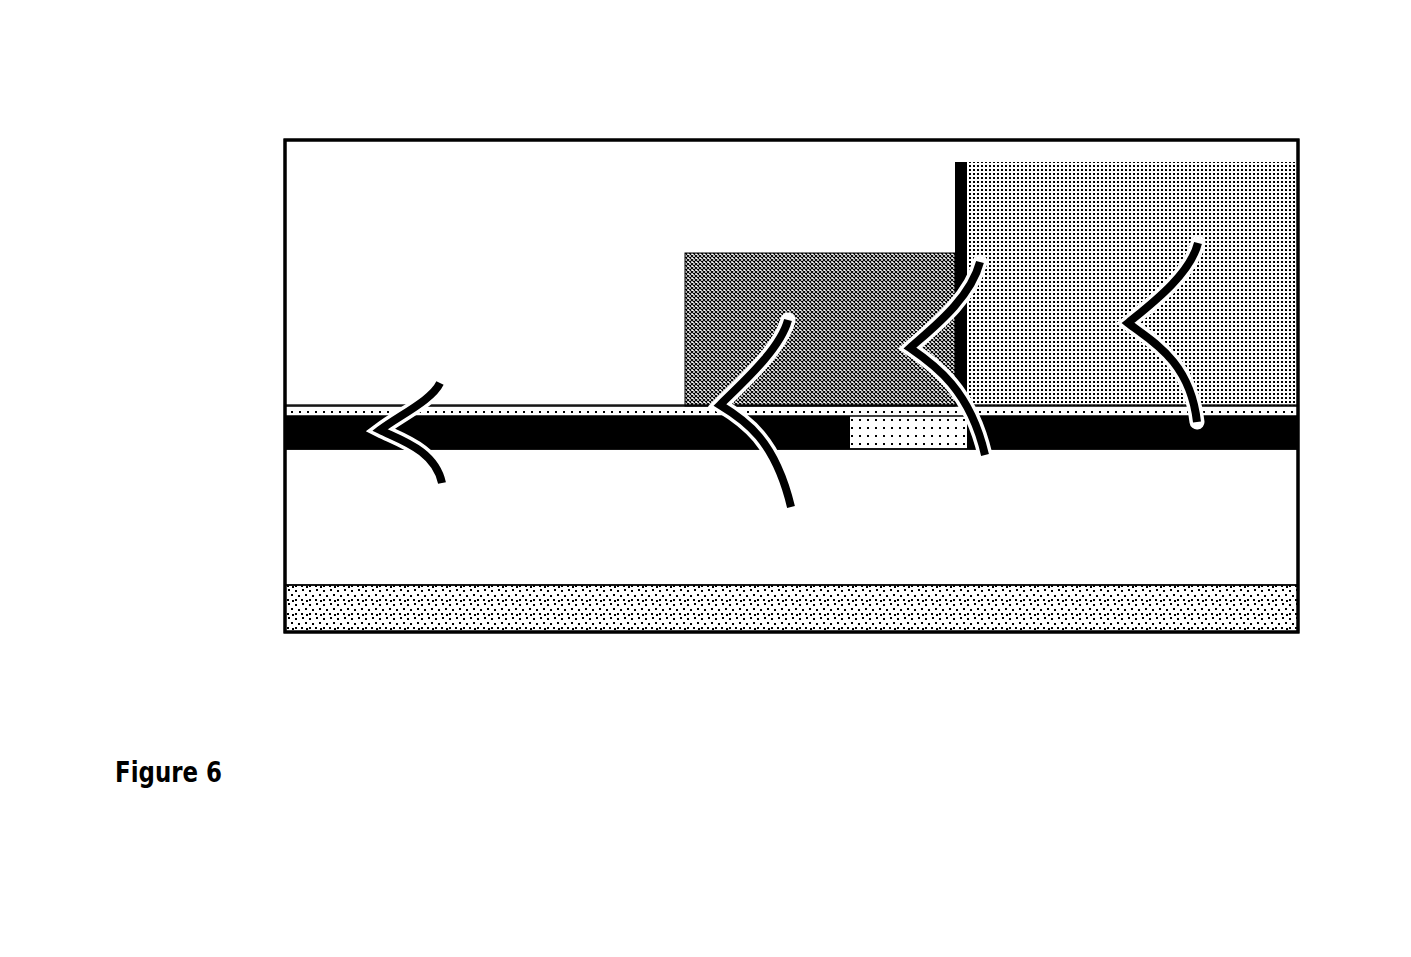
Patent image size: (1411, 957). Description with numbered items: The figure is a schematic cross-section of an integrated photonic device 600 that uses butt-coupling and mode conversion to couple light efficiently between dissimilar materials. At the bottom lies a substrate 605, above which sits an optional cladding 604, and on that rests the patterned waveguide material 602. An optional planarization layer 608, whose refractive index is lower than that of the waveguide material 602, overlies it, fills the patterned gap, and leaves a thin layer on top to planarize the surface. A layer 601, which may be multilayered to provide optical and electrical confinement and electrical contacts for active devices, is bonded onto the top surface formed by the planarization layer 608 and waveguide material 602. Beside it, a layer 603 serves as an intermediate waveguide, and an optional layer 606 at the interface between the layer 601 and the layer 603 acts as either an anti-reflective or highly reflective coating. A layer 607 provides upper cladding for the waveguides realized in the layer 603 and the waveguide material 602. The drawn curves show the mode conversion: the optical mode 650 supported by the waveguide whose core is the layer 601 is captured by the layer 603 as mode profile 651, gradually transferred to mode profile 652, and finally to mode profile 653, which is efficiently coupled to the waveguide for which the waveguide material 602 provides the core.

The integrated photonic device 600 is at (122, 87).
The layer 601 is at (1299, 286).
The waveguide material 602 is at (285, 430).
The intermediate waveguide layer 603 is at (822, 253).
The cladding 604 is at (285, 507).
The substrate 605 is at (285, 590).
The layer 606 is at (957, 162).
The upper cladding layer 607 is at (285, 280).
The planarization layer 608 is at (344, 407).
The optical mode 650 is at (1212, 452).
The mode profile 651 is at (985, 457).
The mode profile 652 is at (797, 510).
The mode profile 653 is at (447, 488).